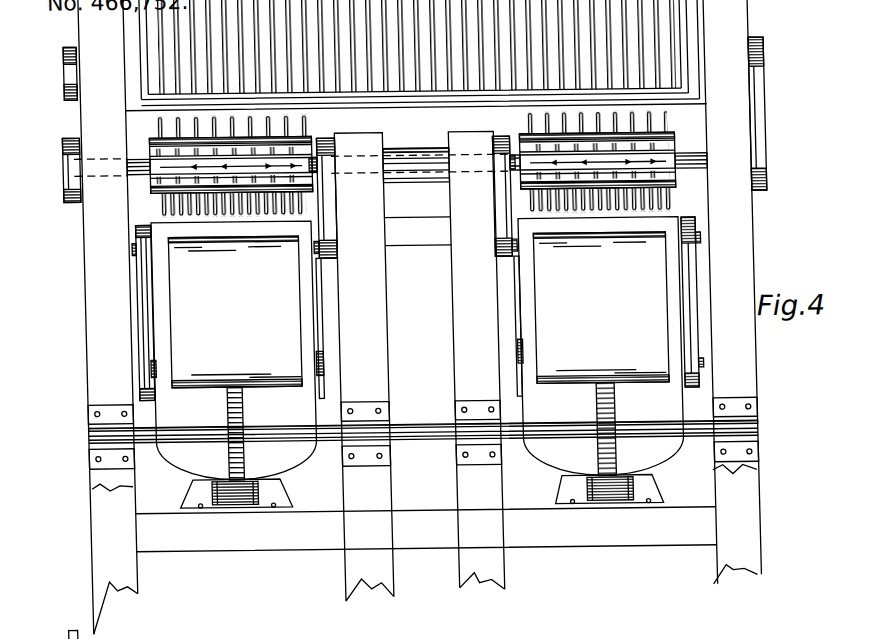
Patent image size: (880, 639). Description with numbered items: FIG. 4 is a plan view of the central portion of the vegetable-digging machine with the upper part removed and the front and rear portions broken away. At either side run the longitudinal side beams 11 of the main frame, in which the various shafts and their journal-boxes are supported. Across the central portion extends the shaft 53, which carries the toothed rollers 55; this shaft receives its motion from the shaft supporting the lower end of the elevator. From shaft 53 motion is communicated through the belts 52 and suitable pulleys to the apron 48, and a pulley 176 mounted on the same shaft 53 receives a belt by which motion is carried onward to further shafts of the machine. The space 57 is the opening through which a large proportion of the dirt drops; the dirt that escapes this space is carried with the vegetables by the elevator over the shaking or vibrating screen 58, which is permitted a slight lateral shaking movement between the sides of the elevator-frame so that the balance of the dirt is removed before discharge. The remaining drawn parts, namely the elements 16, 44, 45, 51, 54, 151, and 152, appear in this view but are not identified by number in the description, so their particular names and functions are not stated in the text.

The longitudinal side beam 11 is at (759, 358).
The base bracket 16 is at (421, 479).
The central standard 44 is at (297, 367).
The inner guide bar 45 is at (318, 304).
The apron 48 is at (417, 349).
The outer guide bar 51 is at (690, 308).
The belt 52 is at (323, 204).
The shaft 53 is at (136, 173).
The lower fingers 54 is at (245, 218).
The toothed roller 55 is at (286, 162).
The space 57 is at (170, 132).
The shaking or vibrating screen 58 is at (624, 47).
The rack 151 is at (228, 408).
The shaft 152 is at (268, 425).
The pulley 176 is at (69, 186).